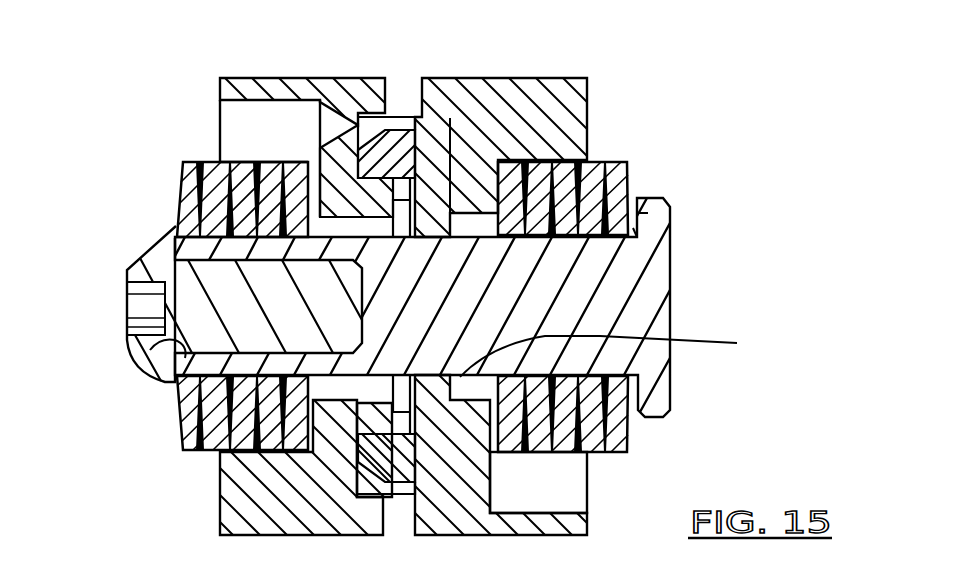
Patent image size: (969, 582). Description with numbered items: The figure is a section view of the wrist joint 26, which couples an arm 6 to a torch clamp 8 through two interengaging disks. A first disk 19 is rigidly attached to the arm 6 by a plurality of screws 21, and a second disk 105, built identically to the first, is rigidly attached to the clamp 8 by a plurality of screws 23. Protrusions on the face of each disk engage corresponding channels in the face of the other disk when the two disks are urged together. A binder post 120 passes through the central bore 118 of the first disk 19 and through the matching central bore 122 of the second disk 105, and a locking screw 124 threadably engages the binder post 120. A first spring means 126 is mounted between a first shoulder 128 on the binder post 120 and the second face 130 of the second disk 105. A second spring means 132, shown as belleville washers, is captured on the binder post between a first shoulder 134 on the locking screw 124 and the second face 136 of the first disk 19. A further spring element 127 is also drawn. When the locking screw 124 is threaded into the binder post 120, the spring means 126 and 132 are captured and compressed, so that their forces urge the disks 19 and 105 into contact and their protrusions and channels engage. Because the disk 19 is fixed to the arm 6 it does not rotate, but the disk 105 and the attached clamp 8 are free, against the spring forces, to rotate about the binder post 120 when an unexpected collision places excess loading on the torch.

The arm 6 is at (252, 92).
The clamp 8 is at (512, 100).
The first disk 19 is at (398, 115).
The screws 21 is at (345, 150).
The screws 23 is at (472, 470).
The wrist joint 26 is at (778, 161).
The second disk 105 is at (403, 497).
The central bore 118 is at (335, 400).
The binder post 120 is at (647, 293).
The central bore 122 is at (631, 354).
The locking screw 124 is at (217, 303).
The first spring means 126 is at (567, 212).
The bellows spring 127 is at (563, 414).
The first shoulder 128 is at (645, 213).
The second face 130 is at (550, 158).
The second spring means 132 is at (200, 173).
The first shoulder 134 is at (157, 342).
The second face 136 is at (195, 420).